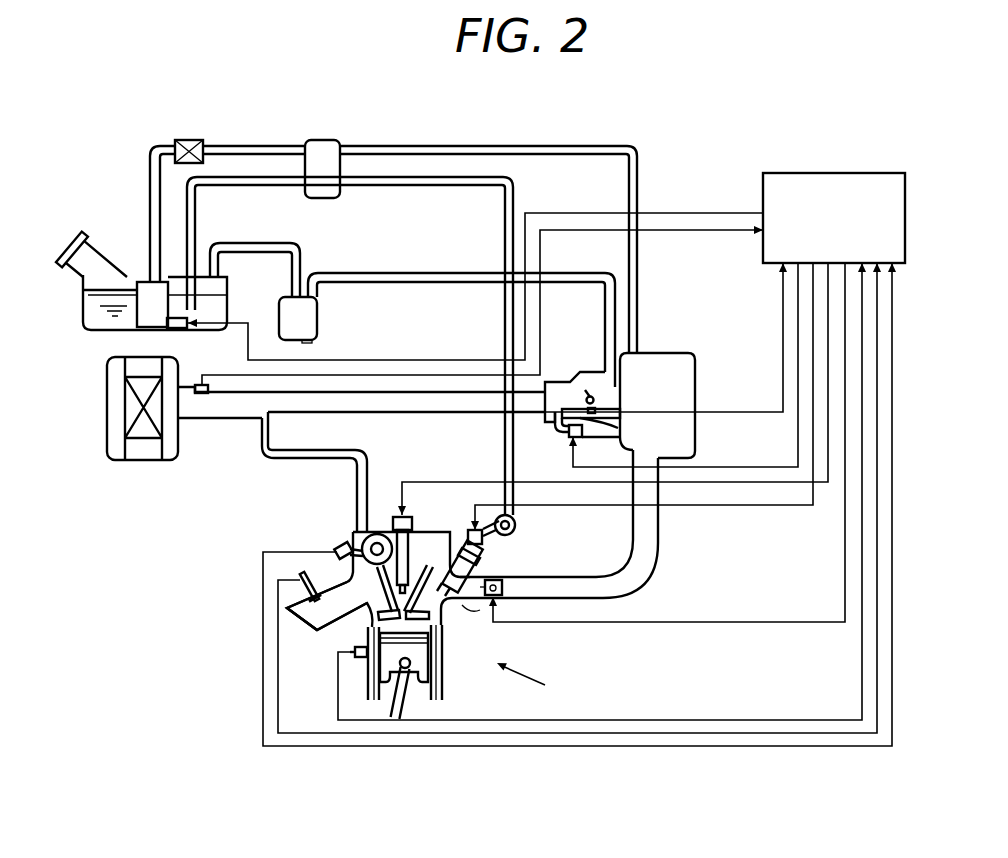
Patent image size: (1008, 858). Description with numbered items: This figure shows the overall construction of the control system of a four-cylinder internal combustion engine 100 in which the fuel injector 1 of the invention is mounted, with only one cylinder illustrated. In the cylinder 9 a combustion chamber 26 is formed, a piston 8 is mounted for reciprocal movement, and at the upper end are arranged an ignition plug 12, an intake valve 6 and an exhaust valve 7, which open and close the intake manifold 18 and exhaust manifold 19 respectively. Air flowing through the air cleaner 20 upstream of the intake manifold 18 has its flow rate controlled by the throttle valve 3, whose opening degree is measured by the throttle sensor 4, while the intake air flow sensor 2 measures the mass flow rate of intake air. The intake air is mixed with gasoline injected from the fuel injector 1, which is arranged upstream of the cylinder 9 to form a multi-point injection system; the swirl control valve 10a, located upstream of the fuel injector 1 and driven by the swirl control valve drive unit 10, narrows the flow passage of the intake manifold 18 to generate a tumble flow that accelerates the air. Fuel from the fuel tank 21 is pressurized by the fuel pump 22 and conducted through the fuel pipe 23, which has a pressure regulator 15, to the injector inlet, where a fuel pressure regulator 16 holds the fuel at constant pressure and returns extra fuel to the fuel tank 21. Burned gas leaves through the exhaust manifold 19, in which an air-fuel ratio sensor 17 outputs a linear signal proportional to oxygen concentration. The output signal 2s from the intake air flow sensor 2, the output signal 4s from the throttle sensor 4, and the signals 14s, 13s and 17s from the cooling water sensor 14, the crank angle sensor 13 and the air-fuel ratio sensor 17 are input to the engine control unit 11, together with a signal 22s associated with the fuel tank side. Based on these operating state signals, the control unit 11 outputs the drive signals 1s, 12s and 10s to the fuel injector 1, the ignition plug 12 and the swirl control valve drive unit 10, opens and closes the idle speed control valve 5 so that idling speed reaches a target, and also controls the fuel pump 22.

The fuel injector 1 is at (514, 535).
The drive signal 1s is at (783, 510).
The intake air flow sensor 2 is at (203, 384).
The output signal 2s is at (425, 373).
The throttle valve 3 is at (598, 402).
The throttle sensor 4 is at (622, 420).
The output signal 4s is at (780, 425).
The idle speed control valve 5 is at (568, 437).
The intake valve 6 is at (440, 620).
The exhaust valve 7 is at (355, 622).
The piston 8 is at (418, 673).
The cylinder 9 is at (445, 668).
The swirl control valve drive unit 10 is at (503, 596).
The swirl control valve 10a is at (512, 573).
The drive signal 10s is at (662, 623).
The engine control unit 11 is at (838, 172).
The ignition plug 12 is at (410, 540).
The drive signal 12s is at (424, 481).
The crank angle sensor 13 is at (340, 540).
The signal 13s is at (680, 747).
The cooling water sensor 14 is at (355, 656).
The signal 14s is at (716, 718).
The pressure regulator 15 is at (329, 140).
The fuel pressure regulator 16 is at (307, 322).
The air-fuel ratio sensor 17 is at (276, 580).
The signal 17s is at (800, 731).
The intake manifold 18 is at (650, 573).
The exhaust manifold 19 is at (300, 623).
The air cleaner 20 is at (146, 462).
The fuel tank 21 is at (101, 255).
The fuel pump 22 is at (86, 330).
The fuel tank sensor signal line 22s is at (689, 212).
The fuel pipe 23 is at (445, 187).
The combustion chamber 26 is at (366, 660).
The internal combustion engine 100 is at (590, 700).